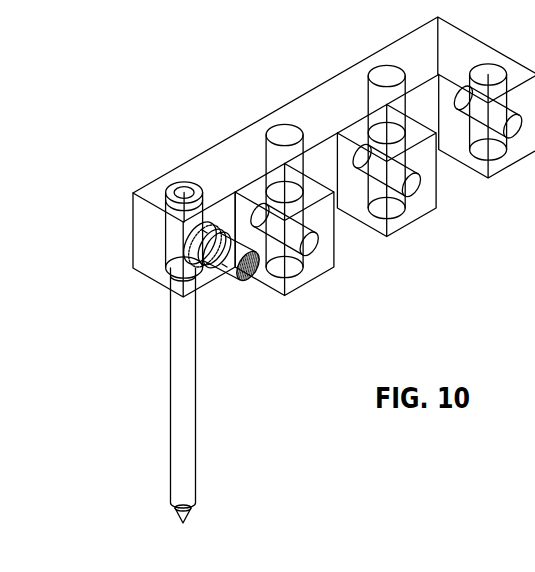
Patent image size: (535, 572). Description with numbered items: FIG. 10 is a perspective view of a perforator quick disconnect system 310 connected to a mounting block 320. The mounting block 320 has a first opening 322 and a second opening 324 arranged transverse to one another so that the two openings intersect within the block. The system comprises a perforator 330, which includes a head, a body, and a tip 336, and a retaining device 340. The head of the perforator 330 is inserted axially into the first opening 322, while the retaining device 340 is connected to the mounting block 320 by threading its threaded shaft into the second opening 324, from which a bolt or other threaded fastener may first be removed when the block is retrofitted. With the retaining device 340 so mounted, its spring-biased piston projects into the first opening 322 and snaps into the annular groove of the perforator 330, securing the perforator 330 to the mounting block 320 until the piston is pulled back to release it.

The perforator quick disconnect system 310 is at (277, 281).
The mounting block 320 is at (126, 230).
The first opening 322 is at (292, 277).
The second opening 324 is at (322, 239).
The perforator 330 is at (160, 368).
The tip 336 is at (176, 510).
The retaining device 340 is at (241, 293).